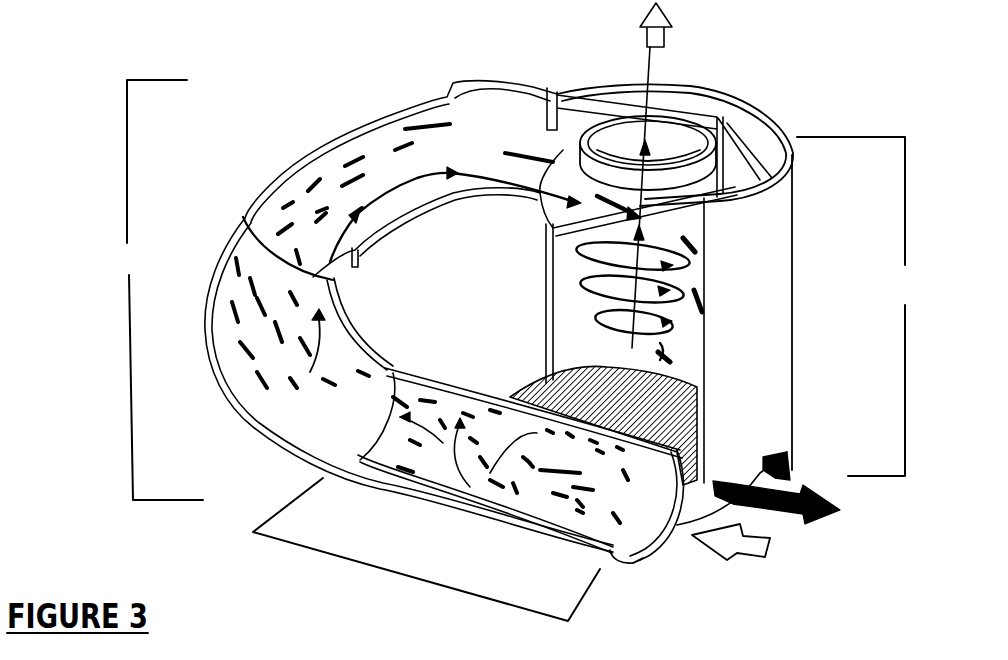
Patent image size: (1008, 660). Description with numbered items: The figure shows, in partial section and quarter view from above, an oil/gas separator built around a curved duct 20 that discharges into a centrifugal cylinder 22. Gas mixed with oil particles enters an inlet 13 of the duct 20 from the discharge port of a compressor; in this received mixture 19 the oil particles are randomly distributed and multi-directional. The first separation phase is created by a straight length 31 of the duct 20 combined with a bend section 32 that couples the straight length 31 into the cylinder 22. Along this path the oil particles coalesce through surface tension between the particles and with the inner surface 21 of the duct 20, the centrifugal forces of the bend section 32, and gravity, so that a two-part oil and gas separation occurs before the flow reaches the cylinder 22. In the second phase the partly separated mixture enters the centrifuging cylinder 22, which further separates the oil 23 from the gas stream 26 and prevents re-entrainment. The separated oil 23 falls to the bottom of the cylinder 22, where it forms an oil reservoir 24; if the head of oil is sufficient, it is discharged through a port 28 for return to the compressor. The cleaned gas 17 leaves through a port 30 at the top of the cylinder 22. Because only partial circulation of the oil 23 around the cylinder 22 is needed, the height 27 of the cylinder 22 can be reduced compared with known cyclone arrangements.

The inlet 13 is at (784, 563).
The gas 17 is at (662, 88).
The received mixture 19 is at (523, 468).
The duct 20 is at (254, 426).
The inner surface 21 is at (237, 330).
The centrifugal cylinder 22 is at (733, 267).
The oil 23 is at (705, 337).
The oil reservoir 24 is at (527, 385).
The gas stream 26 is at (582, 257).
The height 27 is at (859, 306).
The port 28 is at (796, 502).
The port 30 is at (717, 133).
The straight length 31 is at (426, 549).
The bend section 32 is at (159, 290).